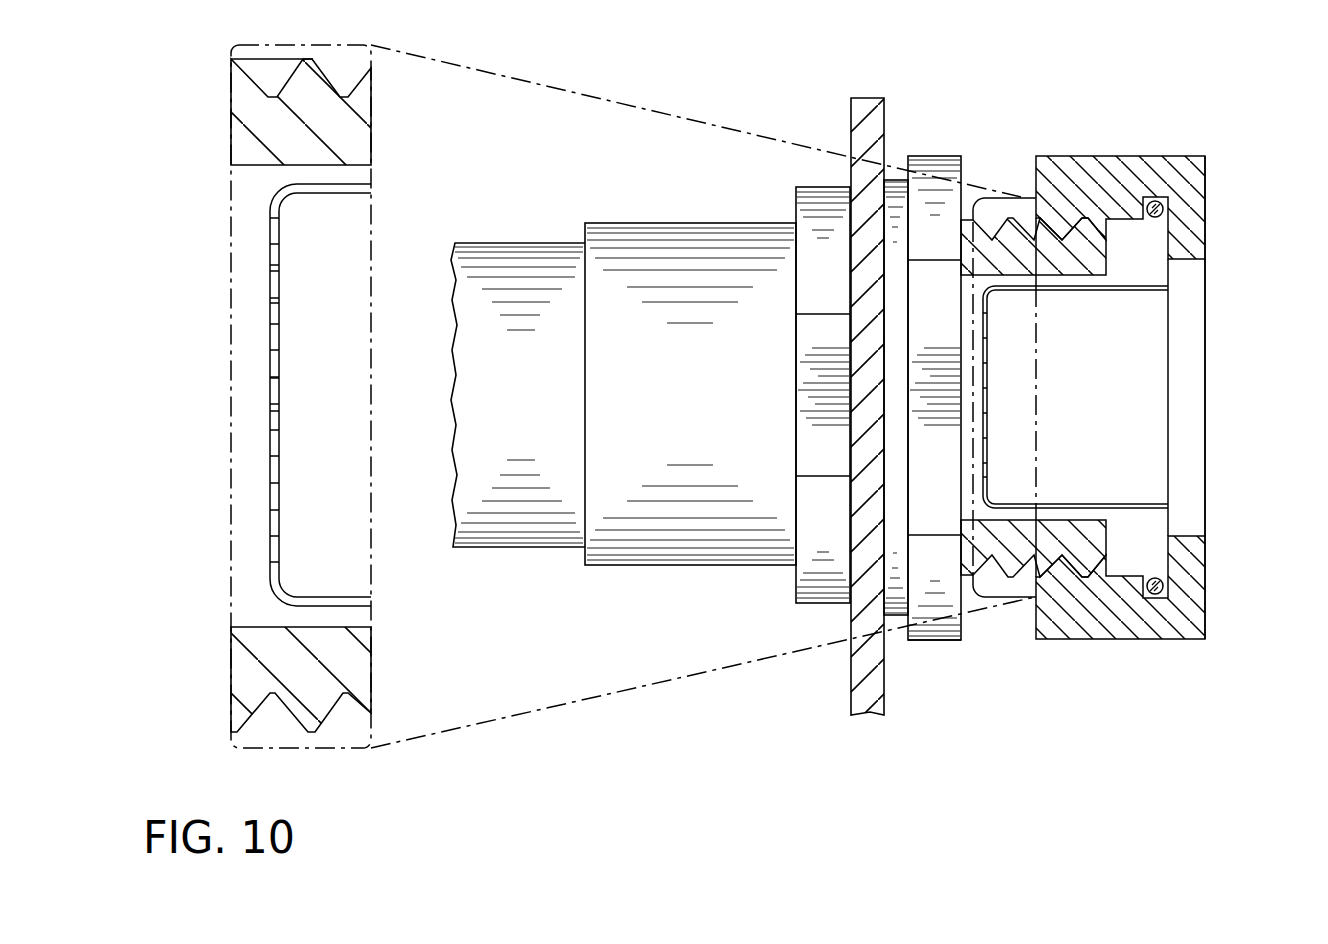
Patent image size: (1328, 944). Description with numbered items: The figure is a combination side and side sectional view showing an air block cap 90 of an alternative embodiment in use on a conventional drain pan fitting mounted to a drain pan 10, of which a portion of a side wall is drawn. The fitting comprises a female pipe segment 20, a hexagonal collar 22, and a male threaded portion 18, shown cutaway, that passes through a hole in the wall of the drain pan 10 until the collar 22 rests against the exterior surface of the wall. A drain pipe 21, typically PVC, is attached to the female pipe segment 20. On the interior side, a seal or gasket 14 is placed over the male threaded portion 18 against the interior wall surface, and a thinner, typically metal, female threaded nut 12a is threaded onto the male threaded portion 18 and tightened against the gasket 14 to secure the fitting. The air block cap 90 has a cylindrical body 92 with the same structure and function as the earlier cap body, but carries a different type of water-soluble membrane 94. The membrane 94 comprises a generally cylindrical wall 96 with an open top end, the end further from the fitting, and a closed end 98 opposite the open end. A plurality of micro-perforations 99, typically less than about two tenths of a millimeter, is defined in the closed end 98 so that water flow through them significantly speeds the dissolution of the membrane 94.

The drain pan 10 is at (853, 132).
The female threaded nut 12a is at (930, 641).
The seal or gasket 14 is at (895, 178).
The male threaded portion 18 is at (265, 657).
The female pipe segment 20 is at (707, 230).
The drain pipe 21 is at (547, 252).
The hexagonal collar 22 is at (800, 208).
The air block cap 90 is at (1230, 135).
The cylindrical body 92 is at (1100, 157).
The membrane 94 is at (265, 592).
The cylindrical wall 96 is at (1062, 506).
The closed end 98 is at (270, 283).
The micro-perforations 99 is at (280, 303).